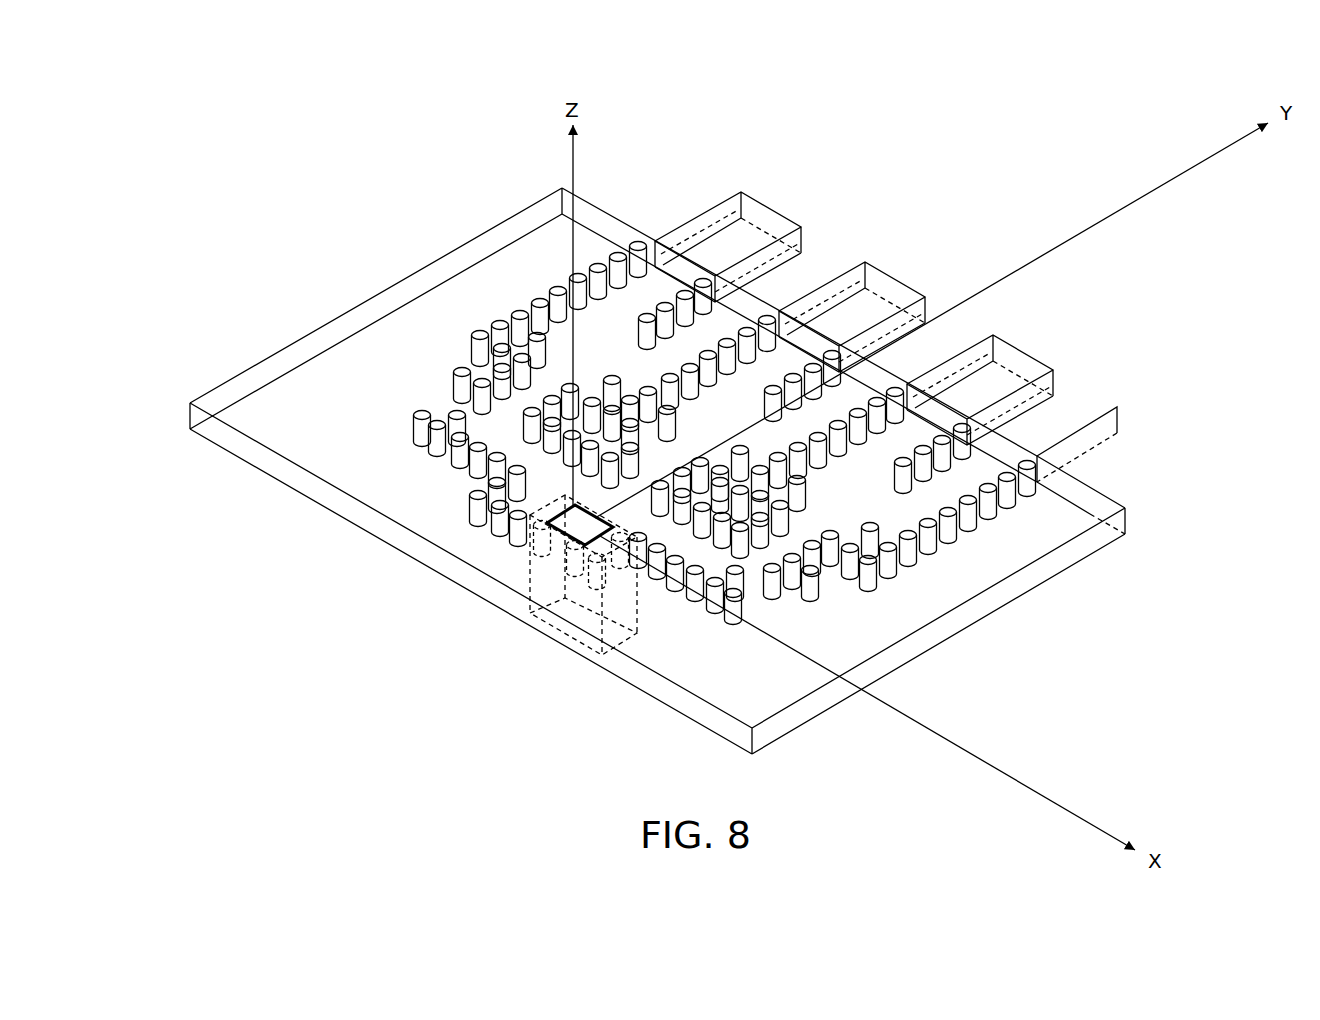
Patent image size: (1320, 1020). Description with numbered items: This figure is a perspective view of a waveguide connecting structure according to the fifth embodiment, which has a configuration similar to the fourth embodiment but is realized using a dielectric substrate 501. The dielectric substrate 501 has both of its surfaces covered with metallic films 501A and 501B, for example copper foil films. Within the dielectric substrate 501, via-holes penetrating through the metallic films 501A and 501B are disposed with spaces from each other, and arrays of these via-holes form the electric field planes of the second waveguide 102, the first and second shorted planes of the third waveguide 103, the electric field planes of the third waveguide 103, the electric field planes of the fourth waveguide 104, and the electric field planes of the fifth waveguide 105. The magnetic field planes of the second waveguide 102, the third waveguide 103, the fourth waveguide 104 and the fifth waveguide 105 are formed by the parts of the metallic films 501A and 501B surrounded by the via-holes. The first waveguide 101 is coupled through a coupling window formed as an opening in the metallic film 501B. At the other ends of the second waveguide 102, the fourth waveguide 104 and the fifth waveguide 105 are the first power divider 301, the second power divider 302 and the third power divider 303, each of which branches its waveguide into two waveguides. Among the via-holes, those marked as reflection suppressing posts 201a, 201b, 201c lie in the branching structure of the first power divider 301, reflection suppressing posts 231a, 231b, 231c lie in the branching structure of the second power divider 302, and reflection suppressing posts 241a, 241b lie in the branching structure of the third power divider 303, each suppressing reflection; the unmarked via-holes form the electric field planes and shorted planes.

The dielectric substrate 501 is at (502, 219).
The metallic film 501A is at (421, 283).
The metallic film 501B is at (336, 387).
The first waveguide 101 is at (545, 578).
The second waveguide 102 is at (438, 470).
The third waveguide 103 is at (475, 531).
The fourth waveguide 104 is at (753, 619).
The fifth waveguide 105 is at (633, 488).
The reflection suppressing post 201a is at (434, 423).
The reflection suppressing post 201b is at (541, 337).
The reflection suppressing post 201c is at (612, 382).
The reflection suppressing post 231a is at (743, 586).
The reflection suppressing post 231b is at (800, 488).
The reflection suppressing post 231c is at (874, 522).
The reflection suppressing post 241a is at (672, 428).
The reflection suppressing post 241b is at (744, 452).
The first power divider 301 is at (803, 220).
The second power divider 302 is at (1072, 366).
The third power divider 303 is at (930, 290).